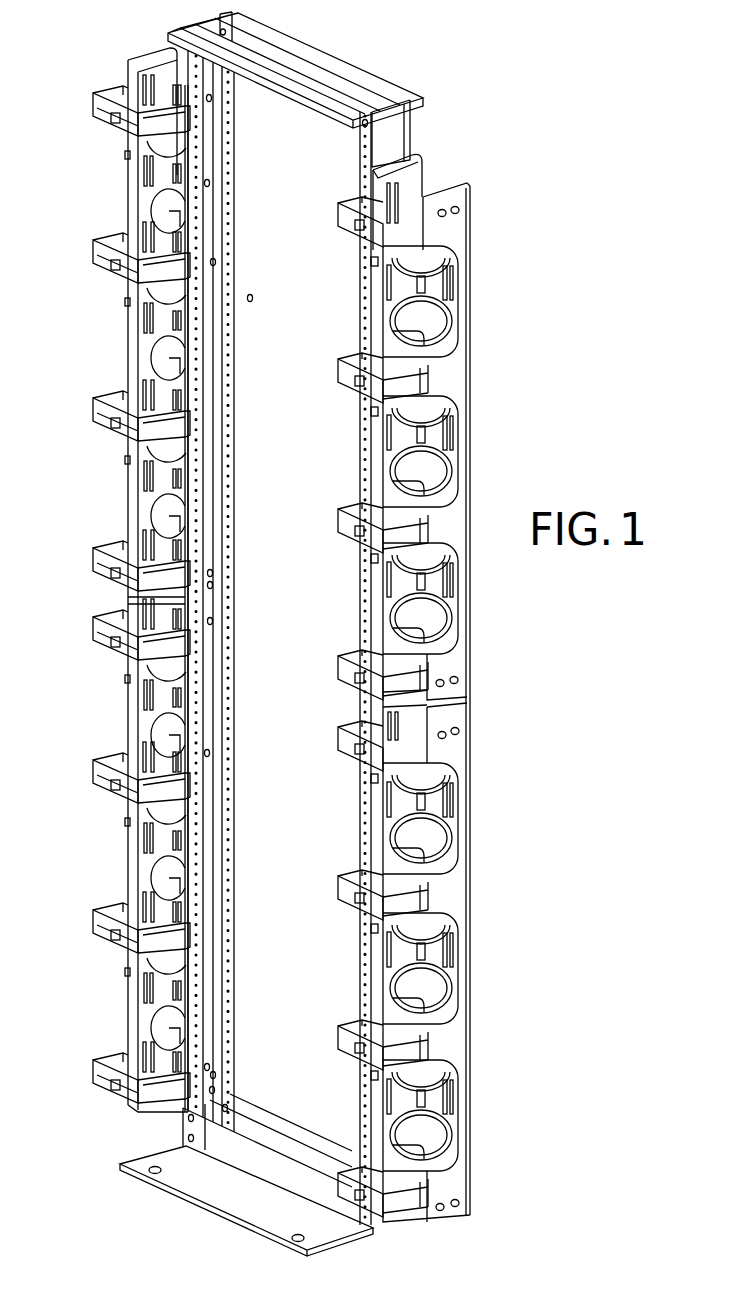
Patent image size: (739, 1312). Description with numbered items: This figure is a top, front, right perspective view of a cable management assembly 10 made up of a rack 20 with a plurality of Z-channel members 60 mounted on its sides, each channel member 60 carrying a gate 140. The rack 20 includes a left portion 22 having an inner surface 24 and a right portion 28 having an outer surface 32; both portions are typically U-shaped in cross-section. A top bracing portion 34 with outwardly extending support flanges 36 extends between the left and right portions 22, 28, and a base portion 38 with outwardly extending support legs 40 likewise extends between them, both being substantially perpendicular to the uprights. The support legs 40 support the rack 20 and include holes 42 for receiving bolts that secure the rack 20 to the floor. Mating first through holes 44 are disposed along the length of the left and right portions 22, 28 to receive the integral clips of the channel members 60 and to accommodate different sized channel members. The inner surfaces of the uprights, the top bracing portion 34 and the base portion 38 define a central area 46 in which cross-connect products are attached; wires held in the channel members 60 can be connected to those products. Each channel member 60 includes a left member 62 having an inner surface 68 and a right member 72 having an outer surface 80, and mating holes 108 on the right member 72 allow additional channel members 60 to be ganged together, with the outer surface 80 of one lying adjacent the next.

The cable management assembly 10 is at (443, 85).
The rack 20 is at (190, 28).
The left portion 22 is at (210, 20).
The inner surface 24 is at (214, 28).
The right portion 28 is at (410, 135).
The outer surface 32 is at (397, 148).
The top bracing portion 34 is at (330, 100).
The support flanges 36 is at (373, 82).
The base portion 38 is at (203, 1130).
The support legs 40 is at (125, 1168).
The holes 42 is at (155, 1180).
The mating first through holes 44 is at (213, 262).
The central area 46 is at (302, 490).
The Z-channel member 60 is at (128, 190).
The left member 62 is at (405, 172).
The inner surface 68 is at (440, 178).
The right member 72 is at (470, 272).
The outer surface 80 is at (455, 296).
The mating holes 108 is at (440, 683).
The gate 140 is at (350, 238).